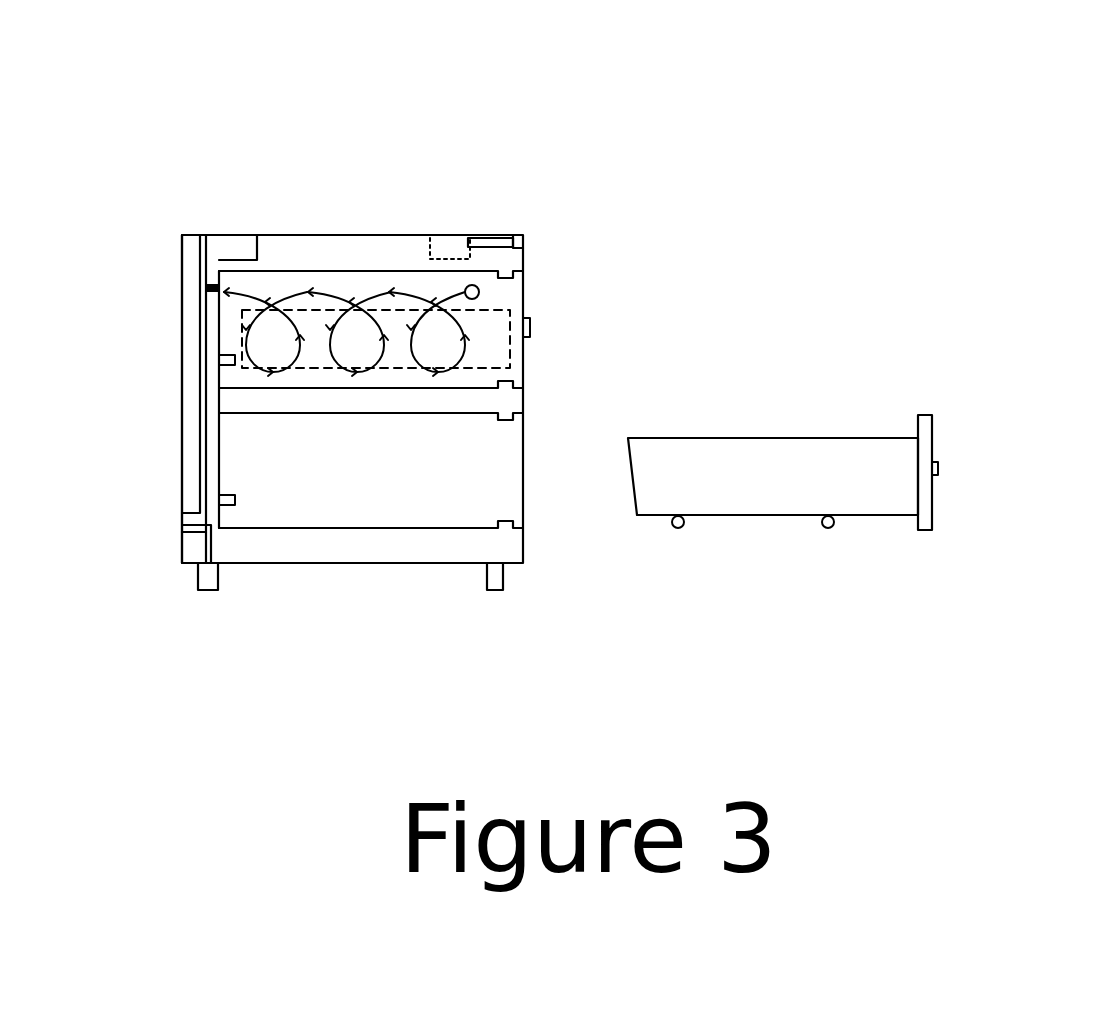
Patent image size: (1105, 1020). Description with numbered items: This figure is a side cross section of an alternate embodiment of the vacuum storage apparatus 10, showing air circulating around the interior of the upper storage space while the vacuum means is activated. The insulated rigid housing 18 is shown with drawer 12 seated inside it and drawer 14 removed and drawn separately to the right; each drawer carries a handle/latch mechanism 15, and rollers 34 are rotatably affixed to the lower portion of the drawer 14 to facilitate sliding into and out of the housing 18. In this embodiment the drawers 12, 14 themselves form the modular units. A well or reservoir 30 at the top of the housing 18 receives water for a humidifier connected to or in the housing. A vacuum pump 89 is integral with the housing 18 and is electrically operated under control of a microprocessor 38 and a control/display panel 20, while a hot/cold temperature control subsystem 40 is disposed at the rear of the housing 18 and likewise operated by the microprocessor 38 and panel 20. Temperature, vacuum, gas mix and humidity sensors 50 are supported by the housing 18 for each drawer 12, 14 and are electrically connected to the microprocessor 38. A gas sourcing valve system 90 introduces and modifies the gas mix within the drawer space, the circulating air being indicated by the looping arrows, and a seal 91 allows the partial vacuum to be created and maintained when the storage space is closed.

The vacuum storage apparatus 10 is at (622, 143).
The drawer 12 is at (524, 280).
The drawer 14 is at (927, 445).
The handle/latch mechanism 15 is at (531, 327).
The insulated rigid housing 18 is at (182, 420).
The control/display panel 20 is at (517, 242).
The well or reservoir 30 is at (240, 241).
The rollers 34 is at (678, 528).
The microprocessor 38 is at (446, 238).
The hot/cold temperature control subsystem 40 is at (188, 315).
The sensors 50 is at (222, 358).
The vacuum pump 89 is at (205, 287).
The gas sourcing valve system 90 is at (470, 285).
The seal 91 is at (511, 366).